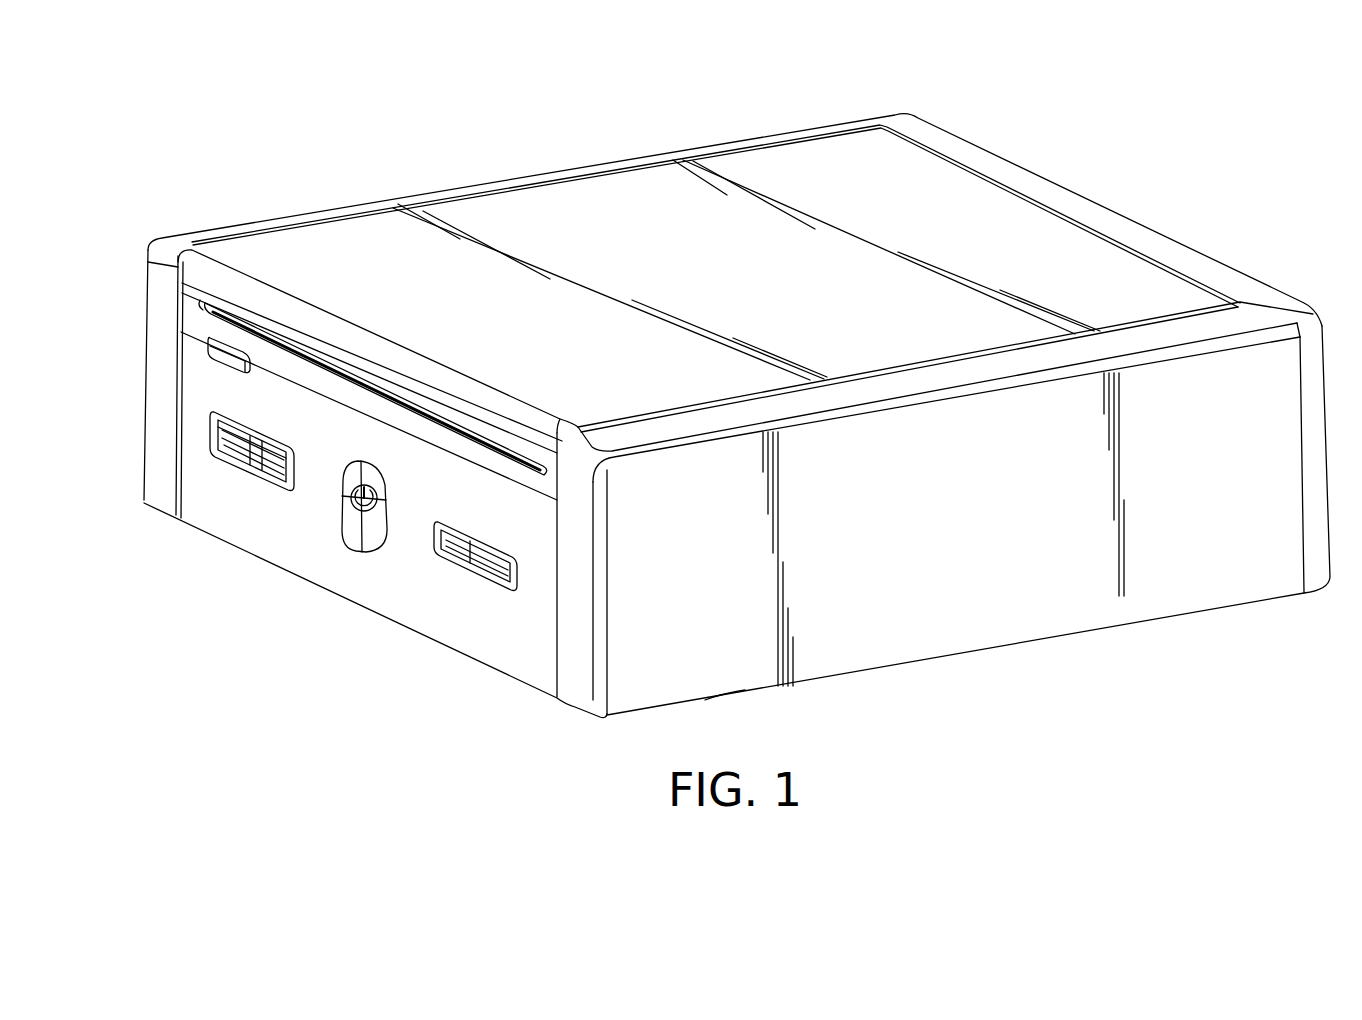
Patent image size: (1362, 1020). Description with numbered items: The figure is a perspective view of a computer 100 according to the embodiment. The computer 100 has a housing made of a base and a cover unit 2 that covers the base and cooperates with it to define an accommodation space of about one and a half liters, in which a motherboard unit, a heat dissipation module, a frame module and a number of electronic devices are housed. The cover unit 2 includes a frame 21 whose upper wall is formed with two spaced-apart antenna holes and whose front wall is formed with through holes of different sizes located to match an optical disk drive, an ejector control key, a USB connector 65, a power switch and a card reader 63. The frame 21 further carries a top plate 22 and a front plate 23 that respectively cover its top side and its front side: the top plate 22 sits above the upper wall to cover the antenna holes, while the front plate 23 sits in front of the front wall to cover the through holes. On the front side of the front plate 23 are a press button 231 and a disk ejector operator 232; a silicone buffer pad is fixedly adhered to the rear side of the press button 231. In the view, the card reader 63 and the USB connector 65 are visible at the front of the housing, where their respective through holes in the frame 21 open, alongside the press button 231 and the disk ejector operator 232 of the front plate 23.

The computer 100 is at (1142, 163).
The cover unit 2 is at (545, 168).
The frame 21 is at (983, 592).
The top plate 22 is at (735, 228).
The front plate 23 is at (383, 593).
The press button 231 is at (350, 522).
The disk ejector operator 232 is at (222, 357).
The card reader 63 is at (478, 568).
The USB connector 65 is at (240, 454).